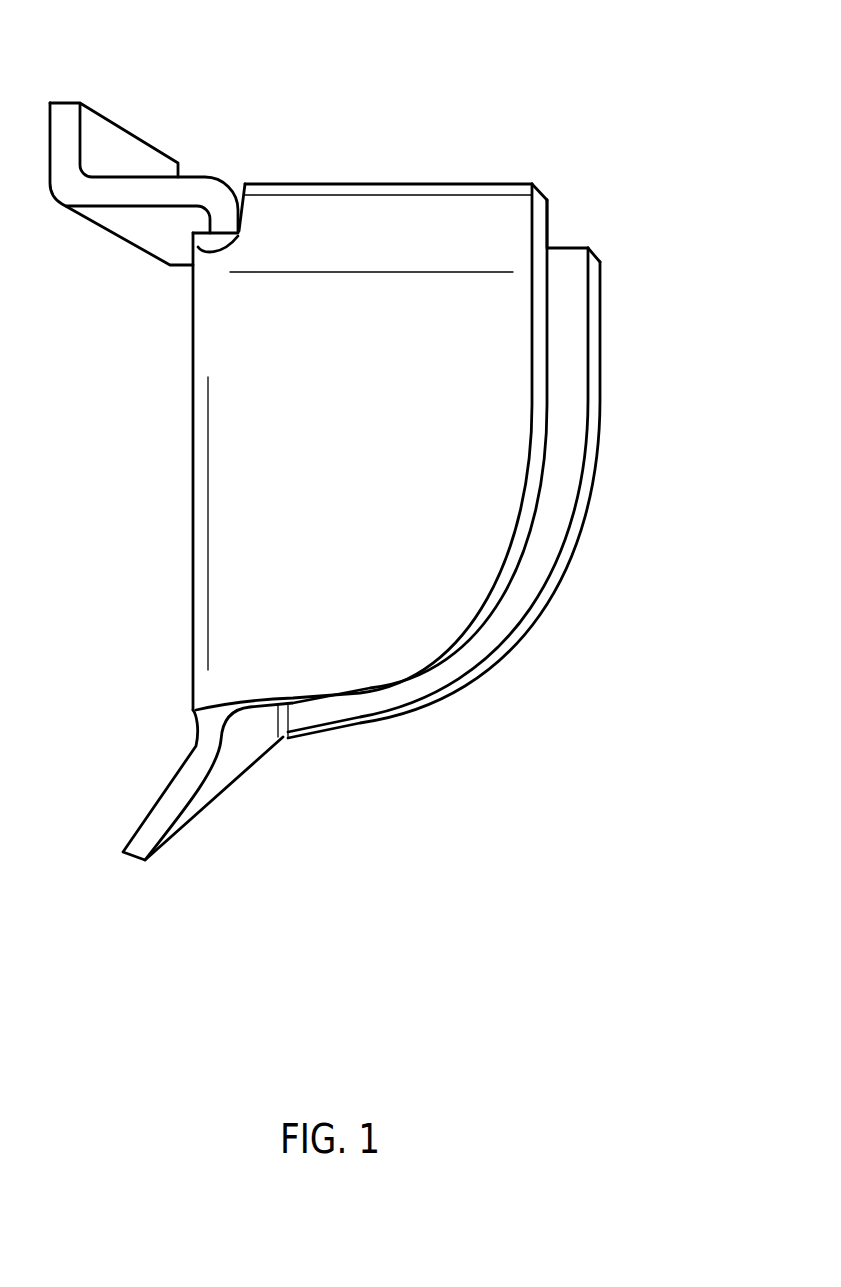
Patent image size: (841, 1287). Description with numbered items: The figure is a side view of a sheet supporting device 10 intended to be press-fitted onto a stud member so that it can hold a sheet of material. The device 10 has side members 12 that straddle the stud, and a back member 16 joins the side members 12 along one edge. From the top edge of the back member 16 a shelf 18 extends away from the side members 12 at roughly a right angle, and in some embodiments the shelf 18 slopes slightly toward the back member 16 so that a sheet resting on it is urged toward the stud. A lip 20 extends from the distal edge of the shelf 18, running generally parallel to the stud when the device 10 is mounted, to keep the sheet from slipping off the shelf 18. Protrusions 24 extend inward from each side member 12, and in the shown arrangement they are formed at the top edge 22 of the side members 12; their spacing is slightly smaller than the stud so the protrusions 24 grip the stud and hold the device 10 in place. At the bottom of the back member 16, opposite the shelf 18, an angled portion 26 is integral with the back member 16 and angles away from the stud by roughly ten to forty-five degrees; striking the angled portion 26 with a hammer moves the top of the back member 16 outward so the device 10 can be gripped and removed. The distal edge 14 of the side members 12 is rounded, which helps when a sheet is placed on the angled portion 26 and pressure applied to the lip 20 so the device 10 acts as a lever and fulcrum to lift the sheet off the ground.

The sheet supporting device 10 is at (692, 211).
The side members 12 is at (375, 440).
The distal edge 14 is at (598, 575).
The back member 16 is at (192, 478).
The shelf 18 is at (205, 177).
The lip 20 is at (98, 108).
The top edge 22 is at (548, 221).
The protrusions 24 is at (497, 183).
The angled portion 26 is at (200, 803).